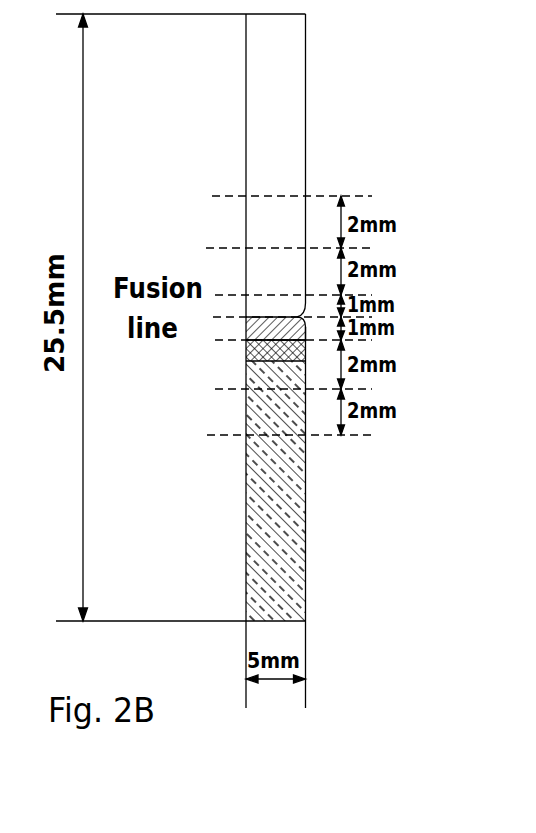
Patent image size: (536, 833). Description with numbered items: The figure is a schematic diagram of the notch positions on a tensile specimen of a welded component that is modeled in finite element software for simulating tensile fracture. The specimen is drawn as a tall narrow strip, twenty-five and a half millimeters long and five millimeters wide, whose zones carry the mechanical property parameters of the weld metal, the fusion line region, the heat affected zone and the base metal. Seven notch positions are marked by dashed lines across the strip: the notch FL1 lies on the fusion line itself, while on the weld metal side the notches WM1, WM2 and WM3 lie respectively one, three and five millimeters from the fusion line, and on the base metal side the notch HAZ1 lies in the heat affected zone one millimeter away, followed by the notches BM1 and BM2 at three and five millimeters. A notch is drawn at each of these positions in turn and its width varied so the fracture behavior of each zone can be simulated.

The notch WM3 is at (329, 197).
The notch WM2 is at (326, 250).
The notch WM1 is at (331, 290).
The notch FL1 is at (327, 321).
The notch HAZ1 is at (336, 344).
The notch BM1 is at (325, 389).
The notch BM2 is at (322, 434).